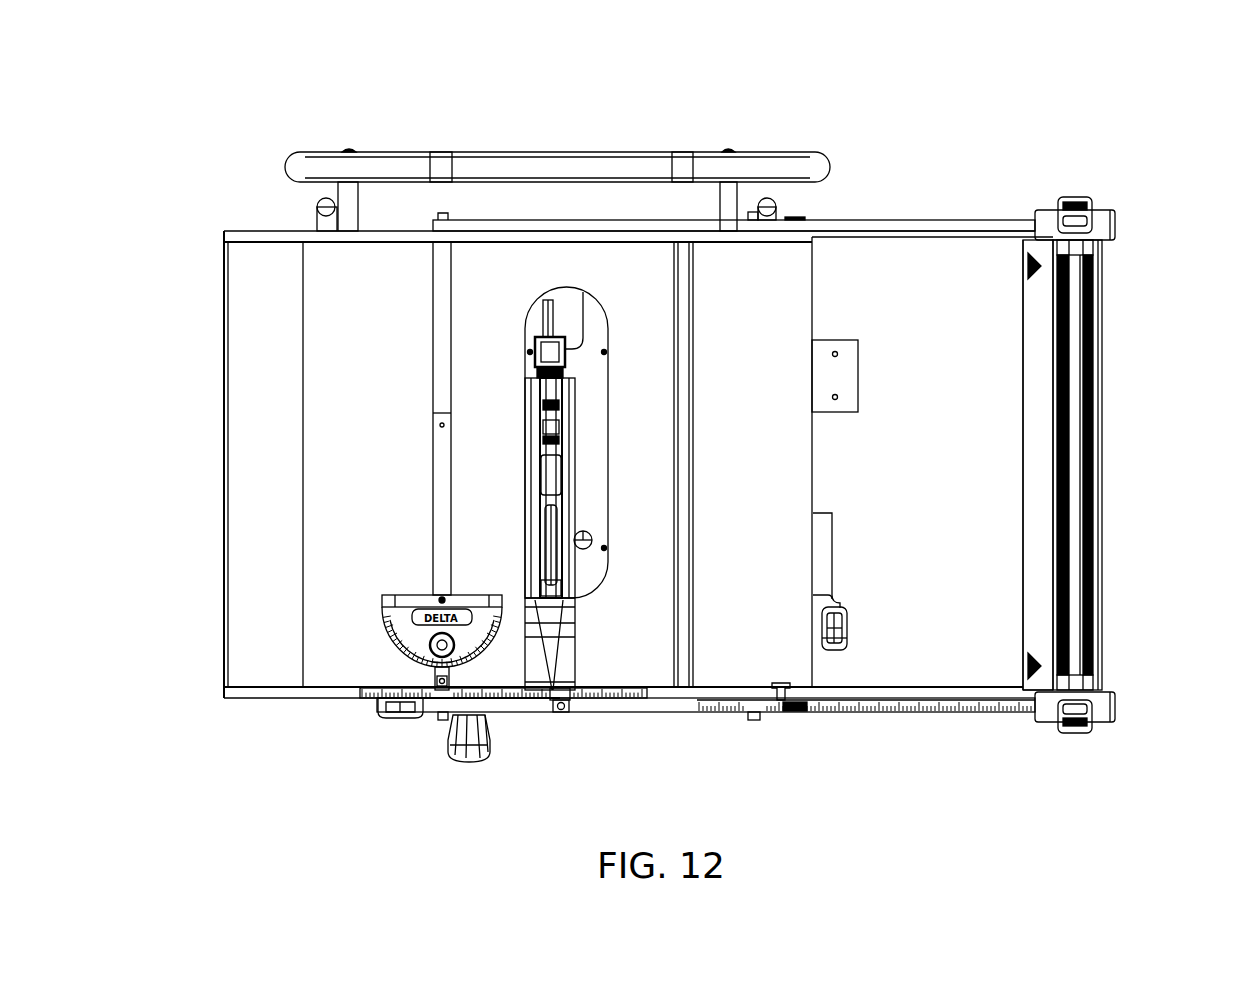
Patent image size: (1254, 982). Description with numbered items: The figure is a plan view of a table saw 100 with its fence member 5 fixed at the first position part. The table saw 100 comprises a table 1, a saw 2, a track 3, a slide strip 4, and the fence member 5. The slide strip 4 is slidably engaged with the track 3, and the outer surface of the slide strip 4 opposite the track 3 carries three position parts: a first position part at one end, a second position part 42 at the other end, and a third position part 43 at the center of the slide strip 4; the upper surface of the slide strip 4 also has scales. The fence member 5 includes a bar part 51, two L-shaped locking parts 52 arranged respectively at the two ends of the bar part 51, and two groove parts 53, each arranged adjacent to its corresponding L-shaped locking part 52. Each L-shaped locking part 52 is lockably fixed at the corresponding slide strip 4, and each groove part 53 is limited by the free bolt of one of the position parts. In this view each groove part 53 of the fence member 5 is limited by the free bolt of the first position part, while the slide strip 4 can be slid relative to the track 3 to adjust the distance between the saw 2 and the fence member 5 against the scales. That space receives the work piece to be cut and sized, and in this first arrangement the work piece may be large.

The table saw 100 is at (222, 178).
The table 1 is at (250, 468).
The saw 2 is at (541, 312).
The track 3 is at (220, 234).
The slide strip 4 is at (610, 205).
The second position part 42 is at (443, 722).
The third position part 43 is at (754, 722).
The fence member 5 is at (1116, 407).
The bar part 51 is at (1060, 523).
The L-shaped locking part 52 is at (1076, 205).
The groove part 53 is at (1045, 222).